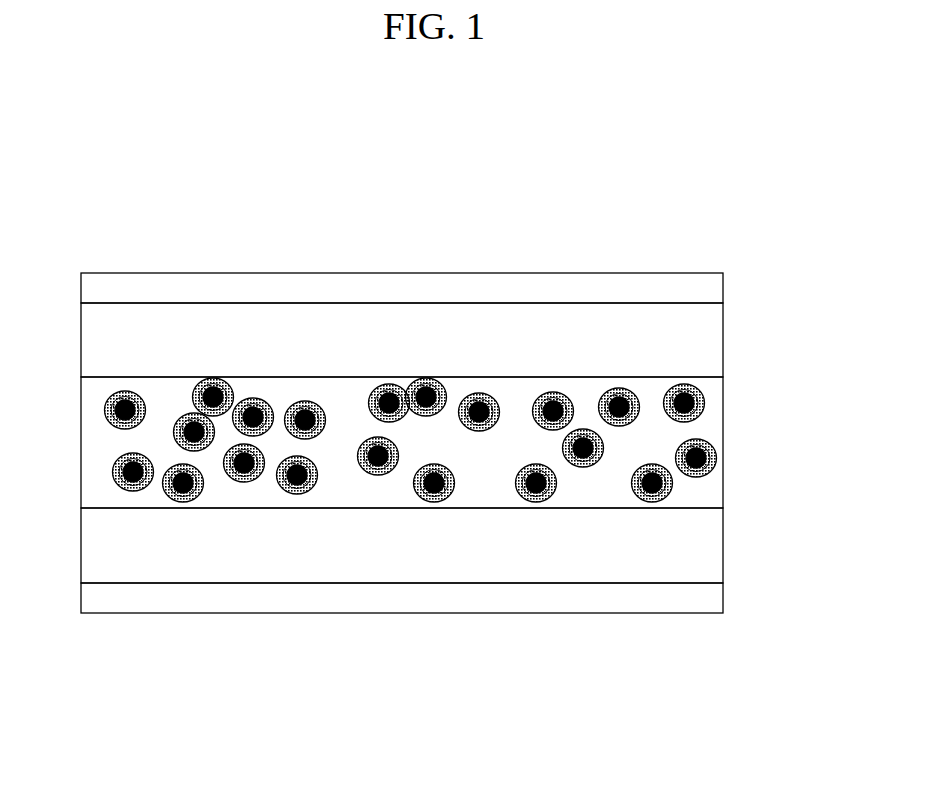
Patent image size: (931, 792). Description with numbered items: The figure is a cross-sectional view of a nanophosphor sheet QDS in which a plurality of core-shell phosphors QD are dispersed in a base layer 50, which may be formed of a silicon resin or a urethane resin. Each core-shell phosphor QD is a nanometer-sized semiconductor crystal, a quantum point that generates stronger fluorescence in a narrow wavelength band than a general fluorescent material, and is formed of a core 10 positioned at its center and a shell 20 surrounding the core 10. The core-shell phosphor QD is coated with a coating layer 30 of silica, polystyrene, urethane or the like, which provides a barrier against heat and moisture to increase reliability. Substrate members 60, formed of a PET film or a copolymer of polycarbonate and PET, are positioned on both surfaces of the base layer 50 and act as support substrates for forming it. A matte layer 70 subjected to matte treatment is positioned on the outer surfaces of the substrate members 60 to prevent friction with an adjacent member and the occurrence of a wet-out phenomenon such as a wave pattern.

The core 10 is at (433, 490).
The shell 20 is at (422, 490).
The coating layer 30 is at (455, 488).
The base layer 50 is at (710, 428).
The substrate member 60 is at (700, 342).
The matte layer 70 is at (705, 291).
The core-shell phosphor QD is at (434, 601).
The nanophosphor sheet QDS is at (608, 250).